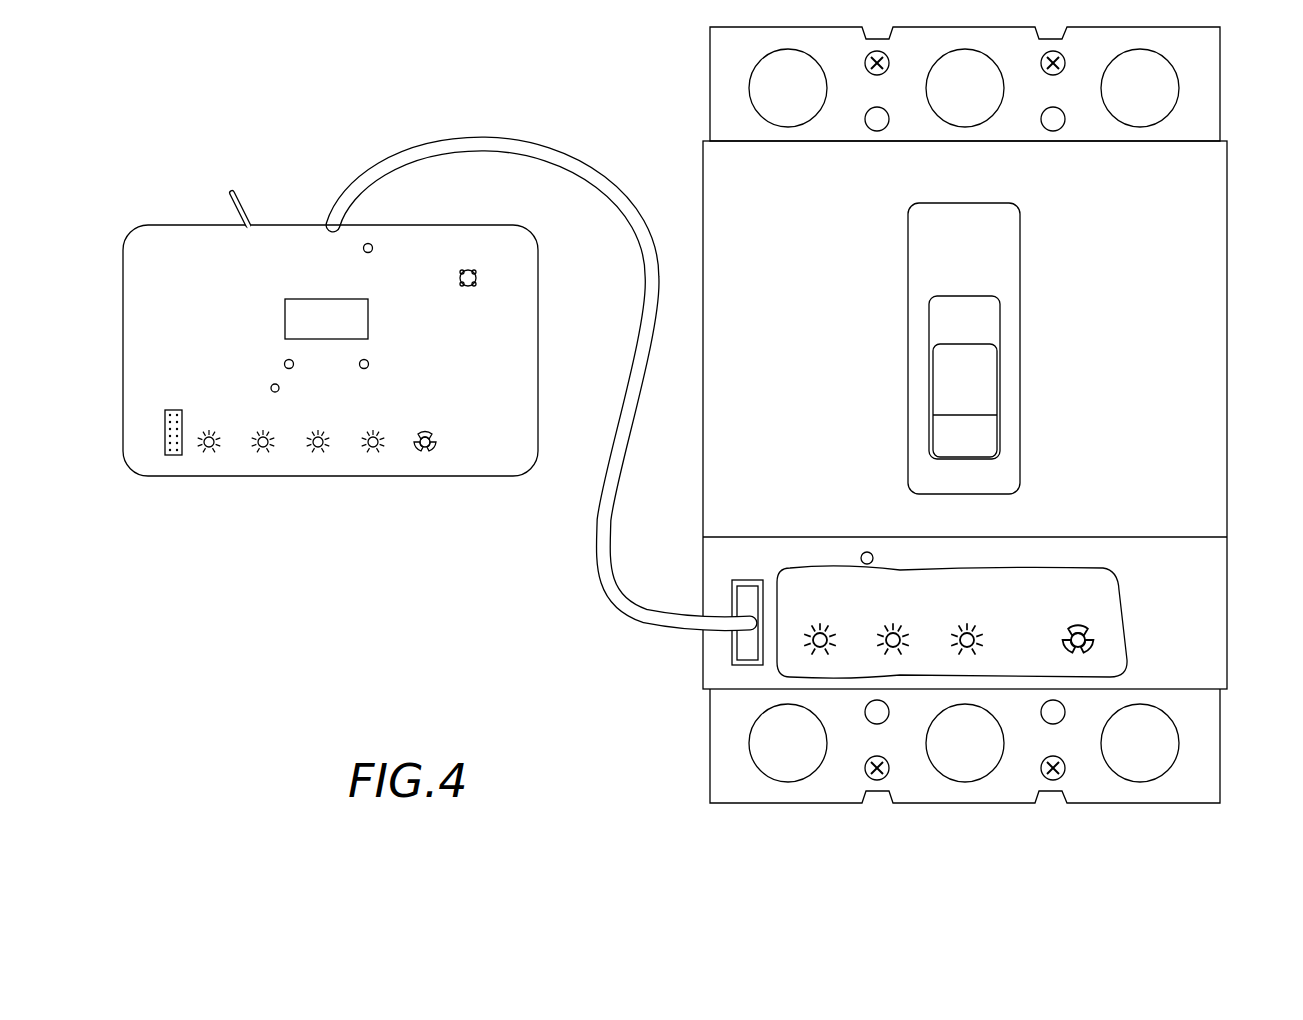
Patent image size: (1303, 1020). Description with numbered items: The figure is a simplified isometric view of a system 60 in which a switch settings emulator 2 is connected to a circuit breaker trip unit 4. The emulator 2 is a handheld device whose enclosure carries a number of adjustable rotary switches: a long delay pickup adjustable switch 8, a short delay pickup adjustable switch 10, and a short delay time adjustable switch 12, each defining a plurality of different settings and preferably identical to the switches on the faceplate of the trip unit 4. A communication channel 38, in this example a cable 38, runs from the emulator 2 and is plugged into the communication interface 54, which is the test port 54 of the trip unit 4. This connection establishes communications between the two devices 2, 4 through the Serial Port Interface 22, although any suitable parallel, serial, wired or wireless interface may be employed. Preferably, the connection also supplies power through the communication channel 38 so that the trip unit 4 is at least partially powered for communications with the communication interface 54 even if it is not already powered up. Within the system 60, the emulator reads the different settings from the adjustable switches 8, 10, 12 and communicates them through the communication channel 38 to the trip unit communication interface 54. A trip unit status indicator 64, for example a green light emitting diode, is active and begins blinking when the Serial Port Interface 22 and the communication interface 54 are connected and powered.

The switch settings emulator 2 is at (160, 220).
The circuit breaker trip unit 4 is at (1232, 602).
The long delay pickup adjustable switch 8 is at (213, 466).
The short delay pickup adjustable switch 10 is at (321, 466).
The short delay time adjustable switch 12 is at (452, 466).
The Serial Port Interface 22 is at (745, 645).
The communication channel 38 is at (598, 577).
The communication interface 54 is at (744, 576).
The system 60 is at (592, 104).
The trip unit status indicator 64 is at (865, 552).